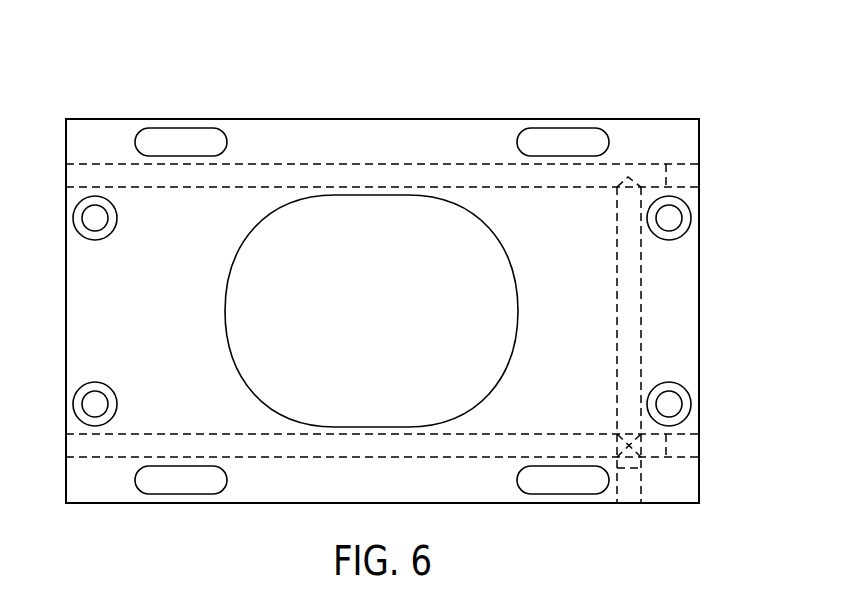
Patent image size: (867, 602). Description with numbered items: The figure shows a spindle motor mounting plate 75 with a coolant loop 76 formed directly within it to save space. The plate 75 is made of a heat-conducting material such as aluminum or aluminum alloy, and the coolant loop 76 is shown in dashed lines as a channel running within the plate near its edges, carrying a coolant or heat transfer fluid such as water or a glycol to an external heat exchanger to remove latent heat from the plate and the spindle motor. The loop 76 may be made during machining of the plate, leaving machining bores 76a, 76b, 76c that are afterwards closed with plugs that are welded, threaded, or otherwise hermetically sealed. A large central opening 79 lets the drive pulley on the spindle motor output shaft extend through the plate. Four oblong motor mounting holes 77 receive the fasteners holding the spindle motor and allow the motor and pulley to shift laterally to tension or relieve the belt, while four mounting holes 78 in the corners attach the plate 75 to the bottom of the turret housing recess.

The spindle motor mounting plate 75 is at (108, 78).
The coolant loop 76 is at (610, 175).
The machining bore 76a is at (690, 177).
The machining bore 76b is at (685, 443).
The machining bore 76c is at (627, 490).
The oblong motor mounting holes 77 is at (203, 137).
The mounting holes 78 is at (88, 218).
The opening 79 is at (388, 318).